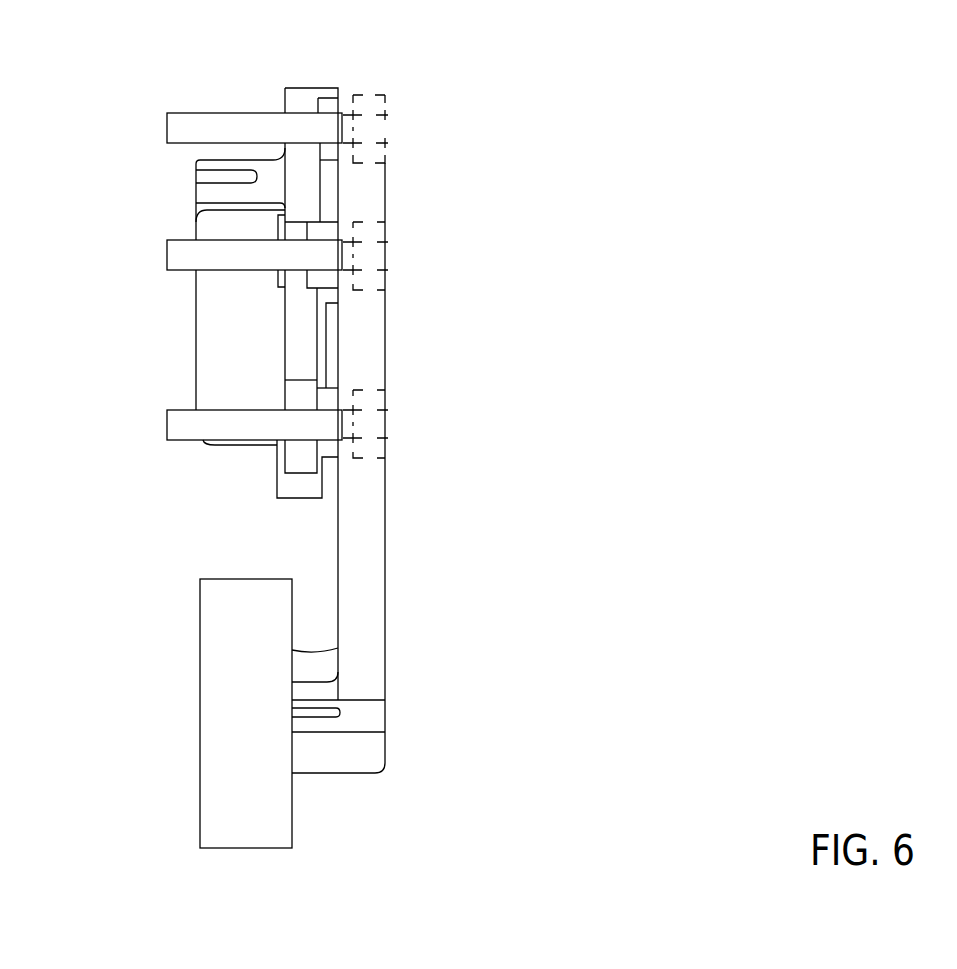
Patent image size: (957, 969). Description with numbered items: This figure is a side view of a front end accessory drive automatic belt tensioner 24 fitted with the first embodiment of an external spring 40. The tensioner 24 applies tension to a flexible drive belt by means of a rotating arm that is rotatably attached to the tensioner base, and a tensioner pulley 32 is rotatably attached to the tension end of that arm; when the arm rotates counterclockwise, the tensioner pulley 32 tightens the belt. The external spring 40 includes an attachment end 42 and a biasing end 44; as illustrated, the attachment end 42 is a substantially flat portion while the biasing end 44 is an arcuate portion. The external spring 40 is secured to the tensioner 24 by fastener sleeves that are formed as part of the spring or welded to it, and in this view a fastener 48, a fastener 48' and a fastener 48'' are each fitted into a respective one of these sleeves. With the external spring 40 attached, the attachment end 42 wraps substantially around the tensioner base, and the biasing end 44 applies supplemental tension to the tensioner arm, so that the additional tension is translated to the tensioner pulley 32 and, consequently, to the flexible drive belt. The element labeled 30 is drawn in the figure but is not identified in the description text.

The tensioner 24 is at (363, 756).
The connector assembly 30 is at (178, 240).
The tensioner pulley 32 is at (233, 708).
The external spring 40 is at (352, 570).
The attachment end 42 is at (365, 178).
The biasing end 44 is at (370, 662).
The fastener 48 is at (305, 88).
The fastener 48' is at (446, 256).
The fastener 48'' is at (439, 424).